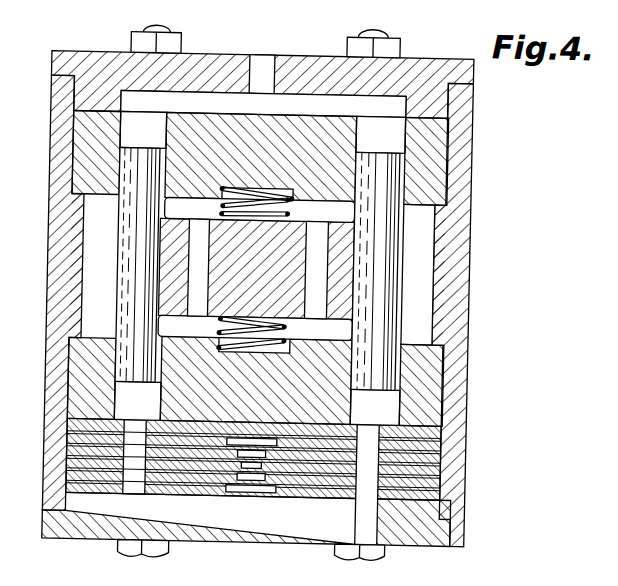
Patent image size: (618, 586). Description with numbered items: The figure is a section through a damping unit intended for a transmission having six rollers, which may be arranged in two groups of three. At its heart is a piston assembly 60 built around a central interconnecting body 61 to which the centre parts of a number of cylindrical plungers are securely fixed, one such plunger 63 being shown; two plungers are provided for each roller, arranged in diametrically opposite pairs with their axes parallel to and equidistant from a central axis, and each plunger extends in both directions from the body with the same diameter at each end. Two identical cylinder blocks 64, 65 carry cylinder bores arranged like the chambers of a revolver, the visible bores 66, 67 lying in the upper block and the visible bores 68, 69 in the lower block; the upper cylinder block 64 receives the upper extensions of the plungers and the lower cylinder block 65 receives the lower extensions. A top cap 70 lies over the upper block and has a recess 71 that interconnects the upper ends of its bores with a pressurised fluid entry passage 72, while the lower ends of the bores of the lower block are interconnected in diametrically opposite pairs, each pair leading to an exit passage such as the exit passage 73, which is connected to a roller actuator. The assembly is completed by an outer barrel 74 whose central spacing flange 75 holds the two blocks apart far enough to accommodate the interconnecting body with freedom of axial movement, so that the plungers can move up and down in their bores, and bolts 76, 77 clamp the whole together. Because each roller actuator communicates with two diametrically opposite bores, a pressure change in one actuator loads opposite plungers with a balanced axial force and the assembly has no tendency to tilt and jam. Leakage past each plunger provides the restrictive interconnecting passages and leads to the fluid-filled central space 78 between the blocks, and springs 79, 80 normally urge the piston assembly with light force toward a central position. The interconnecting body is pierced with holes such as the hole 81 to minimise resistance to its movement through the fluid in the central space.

The piston assembly 60 is at (408, 228).
The central interconnecting body 61 is at (319, 225).
The cylindrical plunger 63 is at (130, 303).
The cylinder block 64 is at (187, 127).
The cylinder block 65 is at (75, 365).
The cylinder bore 66 is at (127, 126).
The cylinder bore 67 is at (399, 133).
The cylinder bore 68 is at (122, 399).
The cylinder bore 69 is at (398, 405).
The top cap 70 is at (446, 64).
The recess 71 is at (313, 99).
The pressurised fluid entry passage 72 is at (262, 53).
The exit passage 73 is at (389, 520).
The outer barrel 74 is at (467, 274).
The central spacing flange 75 is at (90, 274).
The bolt 76 is at (136, 555).
The bolt 77 is at (391, 553).
The central space 78 is at (424, 247).
The spring 79 is at (225, 200).
The spring 80 is at (296, 320).
The hole 81 is at (205, 302).